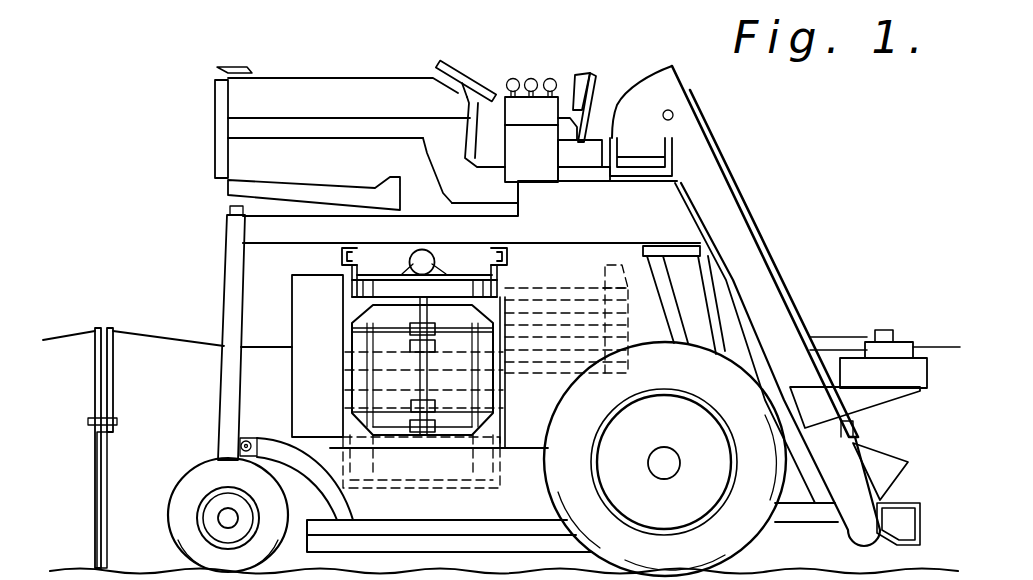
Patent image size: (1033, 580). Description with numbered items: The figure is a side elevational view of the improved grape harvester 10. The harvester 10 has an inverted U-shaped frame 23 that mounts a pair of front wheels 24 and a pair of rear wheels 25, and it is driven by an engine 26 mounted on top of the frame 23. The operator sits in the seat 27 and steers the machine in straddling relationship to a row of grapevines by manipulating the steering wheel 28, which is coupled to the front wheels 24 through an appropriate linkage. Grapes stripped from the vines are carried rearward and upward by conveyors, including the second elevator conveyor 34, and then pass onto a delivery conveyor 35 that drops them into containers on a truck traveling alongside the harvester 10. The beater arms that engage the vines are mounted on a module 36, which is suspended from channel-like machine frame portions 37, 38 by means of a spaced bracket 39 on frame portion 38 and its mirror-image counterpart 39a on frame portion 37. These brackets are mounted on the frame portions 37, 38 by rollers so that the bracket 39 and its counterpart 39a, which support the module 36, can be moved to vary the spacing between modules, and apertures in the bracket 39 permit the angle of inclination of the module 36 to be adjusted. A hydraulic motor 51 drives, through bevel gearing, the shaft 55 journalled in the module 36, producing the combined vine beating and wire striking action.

The harvester 10 is at (180, 203).
The frame 23 is at (267, 228).
The front wheels 24 is at (208, 470).
The rear wheels 25 is at (748, 538).
The engine 26 is at (298, 93).
The seat 27 is at (590, 76).
The steering wheel 28 is at (458, 84).
The second elevator conveyor 34 is at (770, 306).
The delivery conveyor 35 is at (674, 149).
The module 36 is at (307, 304).
The frame portion 37 is at (343, 257).
The frame portion 38 is at (507, 262).
The bracket 39 is at (478, 262).
The counterpart bracket 39a is at (363, 262).
The hydraulic motor 51 is at (427, 232).
The shaft 55 is at (370, 373).